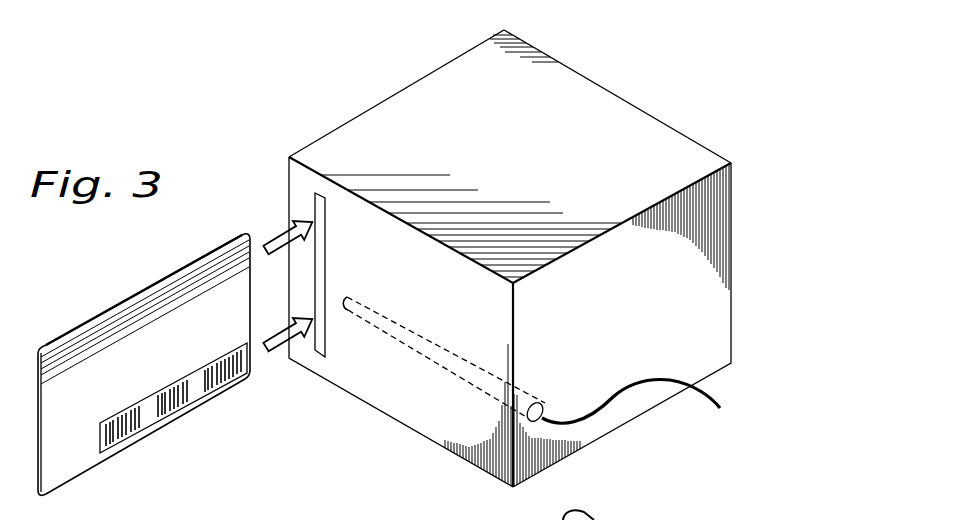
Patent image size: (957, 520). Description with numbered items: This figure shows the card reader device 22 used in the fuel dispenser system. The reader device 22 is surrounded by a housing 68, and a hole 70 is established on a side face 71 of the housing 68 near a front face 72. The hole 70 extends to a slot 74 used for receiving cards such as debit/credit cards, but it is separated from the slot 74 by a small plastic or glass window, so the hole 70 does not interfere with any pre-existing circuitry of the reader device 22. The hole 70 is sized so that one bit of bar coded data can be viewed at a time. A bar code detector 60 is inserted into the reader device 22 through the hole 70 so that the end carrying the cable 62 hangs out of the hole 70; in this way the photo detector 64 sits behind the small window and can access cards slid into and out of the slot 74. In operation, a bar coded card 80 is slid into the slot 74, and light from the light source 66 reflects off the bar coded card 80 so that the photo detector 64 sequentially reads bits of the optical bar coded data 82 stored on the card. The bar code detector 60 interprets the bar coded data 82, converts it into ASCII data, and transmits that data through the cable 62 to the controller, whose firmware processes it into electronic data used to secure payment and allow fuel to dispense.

The reader device 22 is at (291, 151).
The bar code detector 60 is at (427, 333).
The cable 62 is at (657, 378).
The photo detector 64 is at (345, 300).
The light source 66 is at (345, 303).
The housing 68 is at (634, 84).
The hole 70 is at (548, 405).
The side face 71 is at (718, 312).
The front face 72 is at (402, 408).
The slot 74 is at (315, 355).
The bar coded card 80 is at (67, 473).
The bar coded data 82 is at (148, 417).